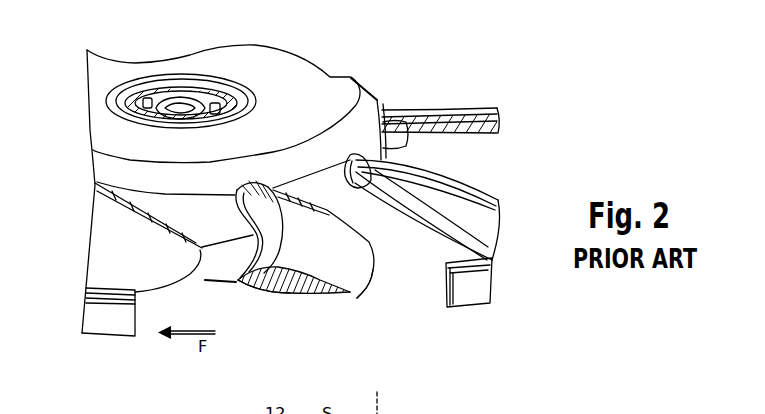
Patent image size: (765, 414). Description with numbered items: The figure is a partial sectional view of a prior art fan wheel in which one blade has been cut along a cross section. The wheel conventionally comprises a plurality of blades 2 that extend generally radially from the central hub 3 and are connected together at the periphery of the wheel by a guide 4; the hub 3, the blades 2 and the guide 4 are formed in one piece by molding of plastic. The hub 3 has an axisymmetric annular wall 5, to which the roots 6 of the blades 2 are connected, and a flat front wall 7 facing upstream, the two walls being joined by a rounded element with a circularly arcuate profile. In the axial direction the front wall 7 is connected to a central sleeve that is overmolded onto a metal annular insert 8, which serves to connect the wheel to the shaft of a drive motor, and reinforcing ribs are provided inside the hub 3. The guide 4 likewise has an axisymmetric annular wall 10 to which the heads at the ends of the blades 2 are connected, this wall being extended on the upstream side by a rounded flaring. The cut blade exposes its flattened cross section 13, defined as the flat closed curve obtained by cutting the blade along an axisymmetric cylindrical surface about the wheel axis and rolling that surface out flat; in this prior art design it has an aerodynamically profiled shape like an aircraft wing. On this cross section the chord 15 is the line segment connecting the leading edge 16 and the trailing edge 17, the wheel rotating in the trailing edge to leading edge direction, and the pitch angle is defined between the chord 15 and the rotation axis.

The blades 2 is at (487, 150).
The central hub 3 is at (330, 92).
The guide 4 is at (103, 320).
The axisymmetric annular wall 5 is at (402, 110).
The roots 6 is at (263, 185).
The flat front wall 7 is at (128, 134).
The metal annular insert 8 is at (180, 108).
The axisymmetric annular wall 10 is at (446, 288).
The flattened cross section 13 is at (300, 293).
The chord 15 is at (252, 292).
The leading edge 16 is at (205, 281).
The trailing edge 17 is at (378, 312).